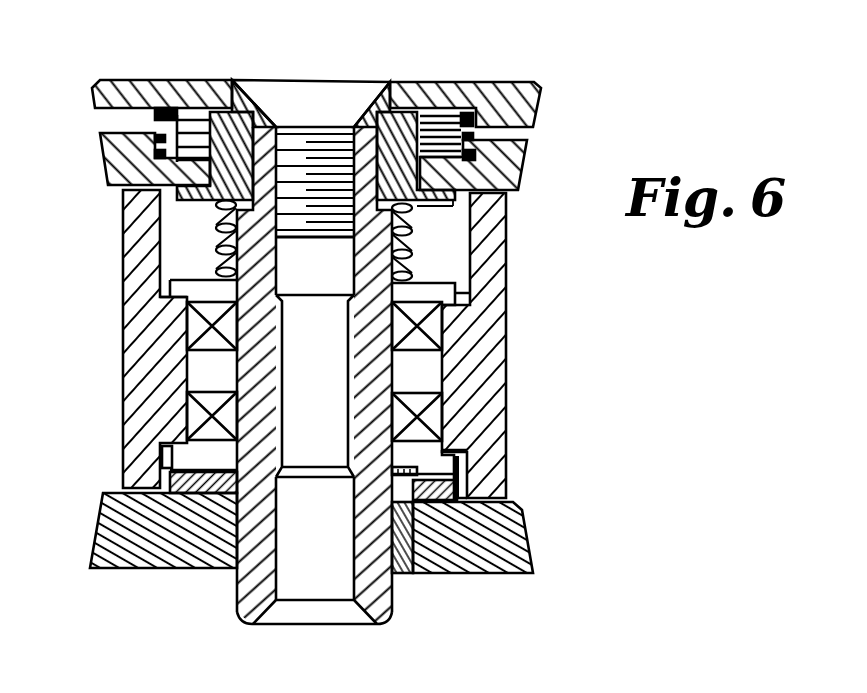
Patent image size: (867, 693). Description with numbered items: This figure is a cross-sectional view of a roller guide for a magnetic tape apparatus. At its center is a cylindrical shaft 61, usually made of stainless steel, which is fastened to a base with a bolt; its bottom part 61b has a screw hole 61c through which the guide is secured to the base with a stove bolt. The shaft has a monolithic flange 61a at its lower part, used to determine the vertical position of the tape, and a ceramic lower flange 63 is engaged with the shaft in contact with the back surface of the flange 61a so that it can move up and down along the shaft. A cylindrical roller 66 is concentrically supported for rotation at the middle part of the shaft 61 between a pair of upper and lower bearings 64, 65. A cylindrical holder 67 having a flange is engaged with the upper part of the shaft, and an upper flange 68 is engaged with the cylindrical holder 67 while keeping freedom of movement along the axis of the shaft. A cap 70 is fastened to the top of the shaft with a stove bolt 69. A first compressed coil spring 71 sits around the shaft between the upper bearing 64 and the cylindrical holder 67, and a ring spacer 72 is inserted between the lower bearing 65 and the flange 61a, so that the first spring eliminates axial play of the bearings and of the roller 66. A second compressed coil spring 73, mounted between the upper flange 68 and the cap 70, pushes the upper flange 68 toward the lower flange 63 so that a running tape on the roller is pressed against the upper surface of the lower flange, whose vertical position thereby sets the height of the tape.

The cylindrical shaft 61 is at (383, 383).
The flange 61a is at (440, 488).
The bottom part 61b is at (240, 617).
The screw hole 61c is at (330, 587).
The lower flange 63 is at (503, 526).
The upper bearing 64 is at (437, 328).
The lower bearing 65 is at (472, 458).
The cylindrical roller 66 is at (152, 405).
The cylindrical holder 67 is at (224, 122).
The upper flange 68 is at (122, 155).
The stove bolt 69 is at (355, 100).
The cap 70 is at (478, 98).
The first compressed coil spring 71 is at (409, 255).
The ring spacer 72 is at (412, 575).
The second compressed coil spring 73 is at (178, 120).